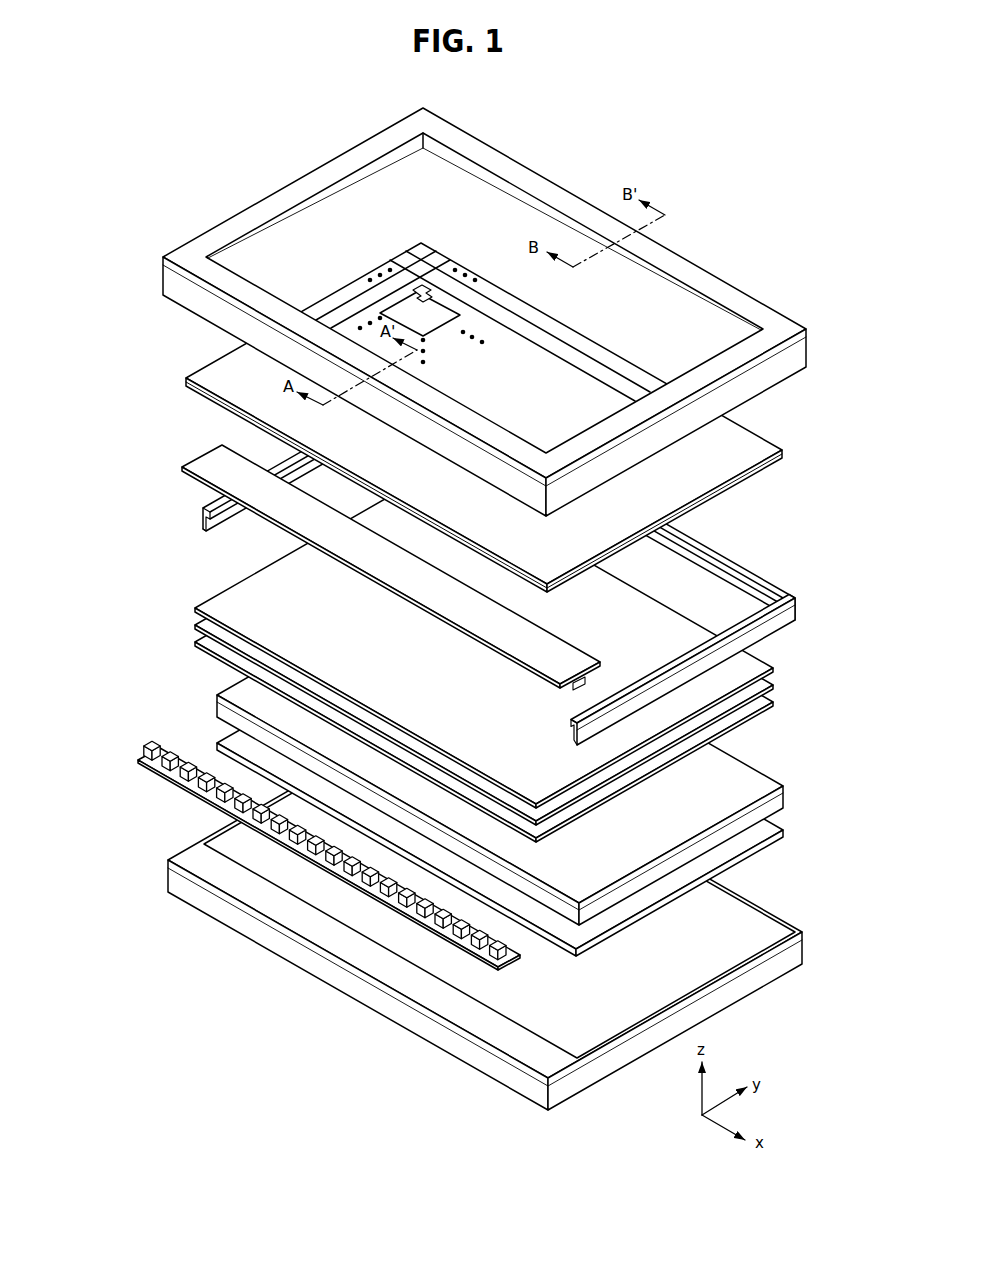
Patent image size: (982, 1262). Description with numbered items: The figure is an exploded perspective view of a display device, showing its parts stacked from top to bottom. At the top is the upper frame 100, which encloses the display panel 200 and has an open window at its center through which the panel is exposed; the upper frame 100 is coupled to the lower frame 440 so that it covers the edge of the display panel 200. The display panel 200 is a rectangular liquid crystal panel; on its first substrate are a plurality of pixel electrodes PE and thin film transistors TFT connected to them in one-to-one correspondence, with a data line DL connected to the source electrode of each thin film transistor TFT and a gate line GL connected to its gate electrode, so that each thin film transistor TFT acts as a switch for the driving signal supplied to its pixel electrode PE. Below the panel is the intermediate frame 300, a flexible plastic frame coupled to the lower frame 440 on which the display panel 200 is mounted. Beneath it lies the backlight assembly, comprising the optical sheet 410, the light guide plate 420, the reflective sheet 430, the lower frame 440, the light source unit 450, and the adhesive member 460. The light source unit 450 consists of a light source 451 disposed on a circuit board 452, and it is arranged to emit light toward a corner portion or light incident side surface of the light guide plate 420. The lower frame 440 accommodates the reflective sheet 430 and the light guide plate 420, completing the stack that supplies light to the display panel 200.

The upper frame 100 is at (797, 355).
The display panel 200 is at (516, 386).
The intermediate frame 300 is at (787, 612).
The optical sheet 410 is at (782, 668).
The light guide plate 420 is at (777, 798).
The reflective sheet 430 is at (772, 829).
The lower frame 440 is at (792, 948).
The light source unit 450 is at (282, 845).
The light source 451 is at (152, 749).
The circuit board 452 is at (141, 764).
The adhesive member 460 is at (211, 462).
The gate line GL is at (398, 265).
The data line DL is at (445, 264).
The thin film transistor TFT is at (415, 282).
The pixel electrode PE is at (458, 305).